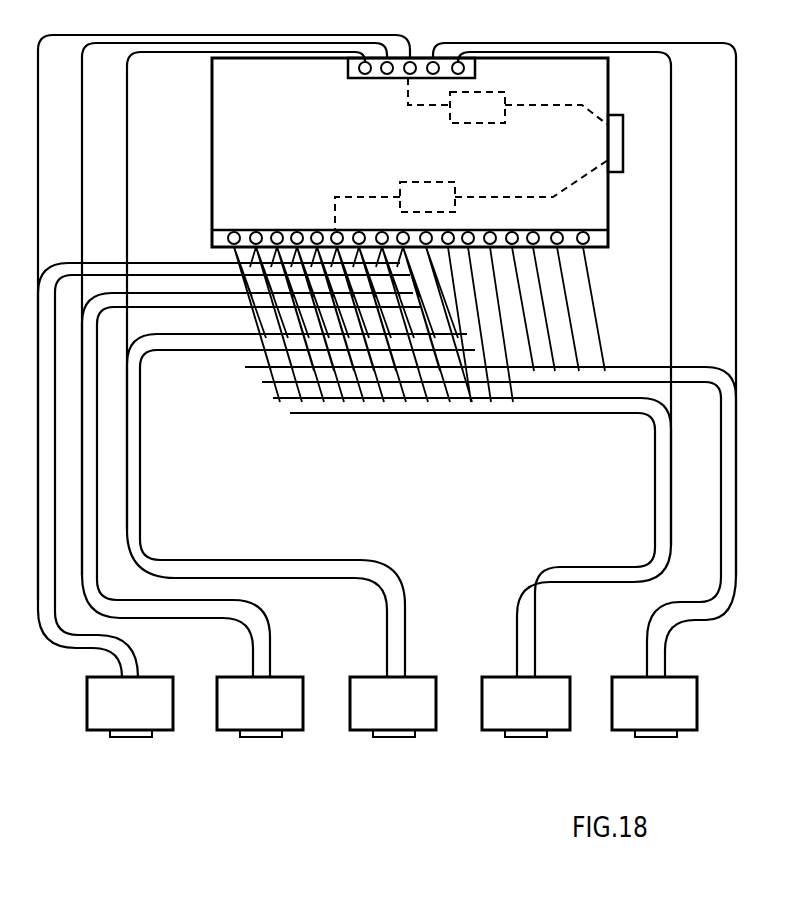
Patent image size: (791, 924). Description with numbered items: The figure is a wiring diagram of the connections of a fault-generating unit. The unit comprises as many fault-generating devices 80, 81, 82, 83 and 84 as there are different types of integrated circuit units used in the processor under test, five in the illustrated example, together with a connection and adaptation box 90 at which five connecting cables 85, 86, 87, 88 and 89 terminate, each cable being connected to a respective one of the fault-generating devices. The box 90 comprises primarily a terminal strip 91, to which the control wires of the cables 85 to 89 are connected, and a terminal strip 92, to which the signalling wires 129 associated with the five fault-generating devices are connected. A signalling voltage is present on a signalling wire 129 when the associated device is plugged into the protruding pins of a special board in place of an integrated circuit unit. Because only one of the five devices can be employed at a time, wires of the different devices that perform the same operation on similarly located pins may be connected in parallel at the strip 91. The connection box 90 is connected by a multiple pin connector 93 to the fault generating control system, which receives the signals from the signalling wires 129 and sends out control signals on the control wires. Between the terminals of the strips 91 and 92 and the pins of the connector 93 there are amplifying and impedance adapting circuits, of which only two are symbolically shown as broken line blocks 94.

The fault-generating device 80 is at (87, 706).
The fault-generating device 81 is at (217, 712).
The fault-generating device 82 is at (350, 716).
The fault-generating device 83 is at (482, 716).
The fault-generating device 84 is at (612, 716).
The connecting cable 85 is at (66, 411).
The connecting cable 86 is at (106, 467).
The connecting cable 87 is at (152, 506).
The connecting cable 88 is at (655, 470).
The connecting cable 89 is at (721, 488).
The connection and adaptation box 90 is at (212, 118).
The terminal strip 91 is at (608, 247).
The terminal strip 92 is at (430, 54).
The multiple pin connector 93 is at (623, 127).
The amplifying and impedance adapting circuit 94 is at (468, 125).
The signalling wire 129 is at (722, 222).